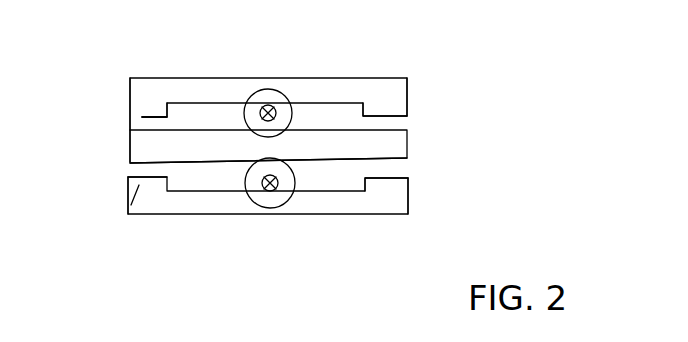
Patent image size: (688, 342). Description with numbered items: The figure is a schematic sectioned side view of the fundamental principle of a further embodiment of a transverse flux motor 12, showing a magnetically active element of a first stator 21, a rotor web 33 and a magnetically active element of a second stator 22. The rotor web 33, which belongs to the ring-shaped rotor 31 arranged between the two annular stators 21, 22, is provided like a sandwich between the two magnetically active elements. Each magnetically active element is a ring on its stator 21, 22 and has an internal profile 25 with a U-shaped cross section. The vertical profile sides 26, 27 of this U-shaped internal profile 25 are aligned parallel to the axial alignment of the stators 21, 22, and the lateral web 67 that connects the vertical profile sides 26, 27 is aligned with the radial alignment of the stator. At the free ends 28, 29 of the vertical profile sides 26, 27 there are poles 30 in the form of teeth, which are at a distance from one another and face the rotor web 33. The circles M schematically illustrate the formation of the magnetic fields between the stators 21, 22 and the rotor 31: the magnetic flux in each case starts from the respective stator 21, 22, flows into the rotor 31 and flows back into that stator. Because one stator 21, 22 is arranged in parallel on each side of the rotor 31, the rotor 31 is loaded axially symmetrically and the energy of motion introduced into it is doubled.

The transverse flux motor 12 is at (504, 47).
The first stator 21 is at (410, 90).
The second stator 22 is at (409, 201).
The internal profile 25 is at (207, 110).
The vertical profile side 26 is at (142, 118).
The vertical profile side 27 is at (400, 105).
The free end 28 is at (152, 95).
The free end 29 is at (398, 119).
The pole 30 is at (131, 106).
The rotor 31 is at (409, 139).
The rotor web 33 is at (398, 159).
The lateral web 67 is at (281, 90).
The circles M is at (261, 89).